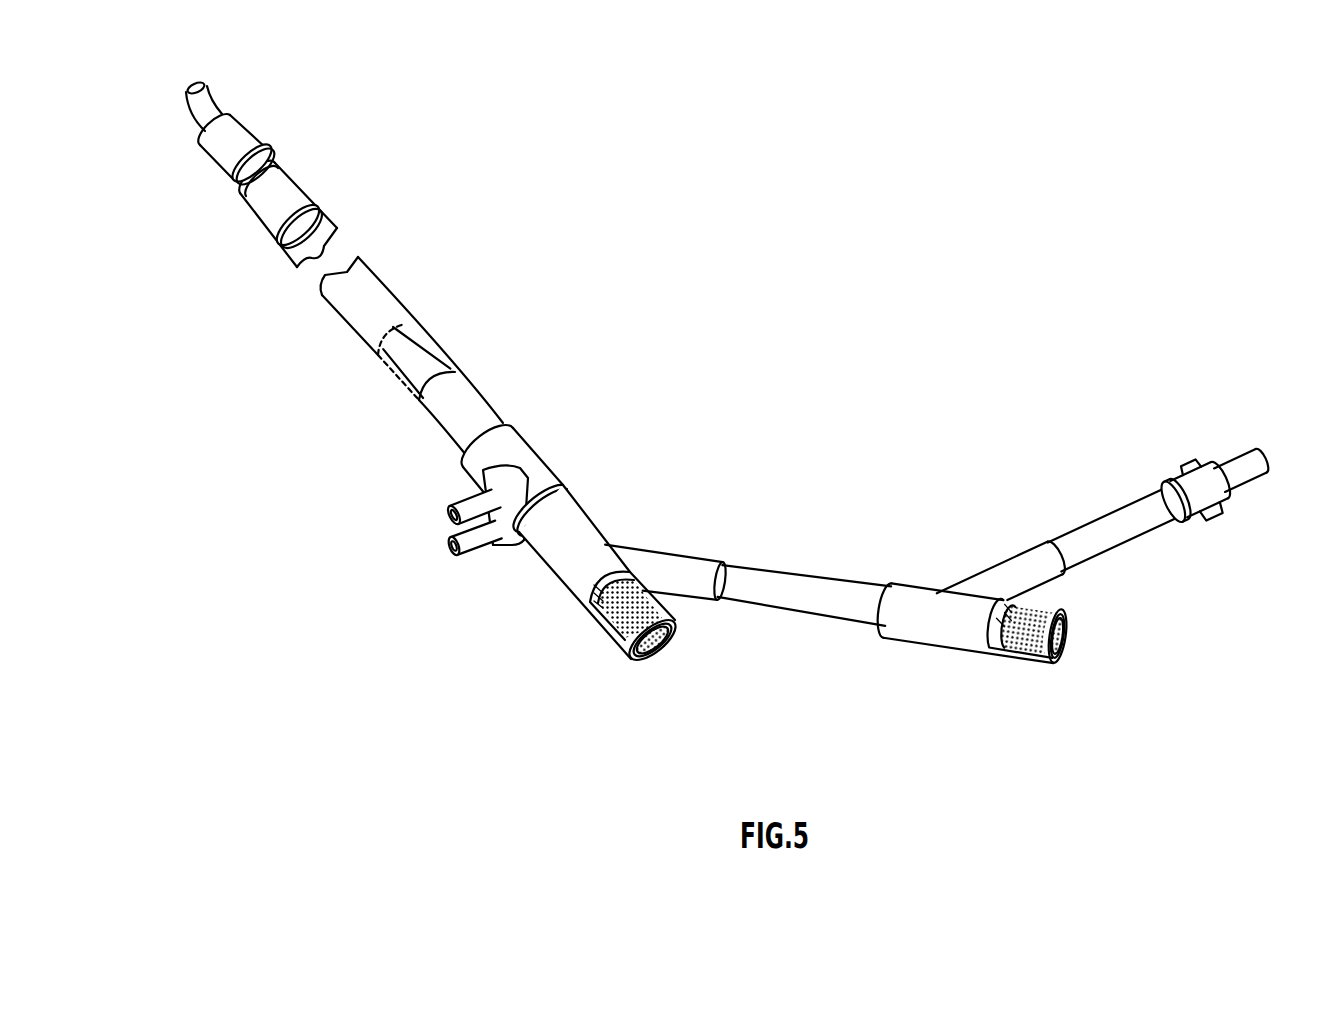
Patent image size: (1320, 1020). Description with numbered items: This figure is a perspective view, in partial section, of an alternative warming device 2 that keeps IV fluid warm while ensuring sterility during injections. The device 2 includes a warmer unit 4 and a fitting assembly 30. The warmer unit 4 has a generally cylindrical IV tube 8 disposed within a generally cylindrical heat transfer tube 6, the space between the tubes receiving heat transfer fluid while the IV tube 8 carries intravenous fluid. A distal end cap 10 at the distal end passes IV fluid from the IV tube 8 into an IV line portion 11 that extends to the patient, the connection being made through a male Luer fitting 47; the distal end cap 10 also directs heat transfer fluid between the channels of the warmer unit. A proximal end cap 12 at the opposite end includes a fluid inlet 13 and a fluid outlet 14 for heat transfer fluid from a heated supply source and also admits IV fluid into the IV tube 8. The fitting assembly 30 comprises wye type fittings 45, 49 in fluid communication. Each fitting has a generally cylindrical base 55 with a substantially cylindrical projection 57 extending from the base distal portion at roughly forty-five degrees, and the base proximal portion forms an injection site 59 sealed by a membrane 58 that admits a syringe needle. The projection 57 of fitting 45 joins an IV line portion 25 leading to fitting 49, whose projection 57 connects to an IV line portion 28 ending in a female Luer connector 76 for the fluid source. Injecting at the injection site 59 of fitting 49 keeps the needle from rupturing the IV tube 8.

The device 2 is at (690, 338).
The warmer unit 4 is at (310, 473).
The heat transfer tube 6 is at (373, 300).
The IV tube 8 is at (415, 358).
The distal end cap 10 is at (343, 145).
The IV line portion 11 is at (212, 92).
The proximal end cap 12 is at (510, 448).
The fluid inlet 13 is at (478, 540).
The fluid outlet 14 is at (458, 503).
The IV line portion 25 is at (812, 583).
The IV line portion 28 is at (1095, 532).
The fitting assembly 30 is at (805, 460).
The wye type fitting 45 is at (616, 527).
The male Luer fitting 47 is at (252, 132).
The wye type fitting 49 is at (922, 572).
The base 55 is at (578, 573).
The projection 57 is at (688, 565).
The membrane 58 is at (667, 613).
The injection site 59 is at (630, 665).
The female Luer connector 76 is at (1240, 468).